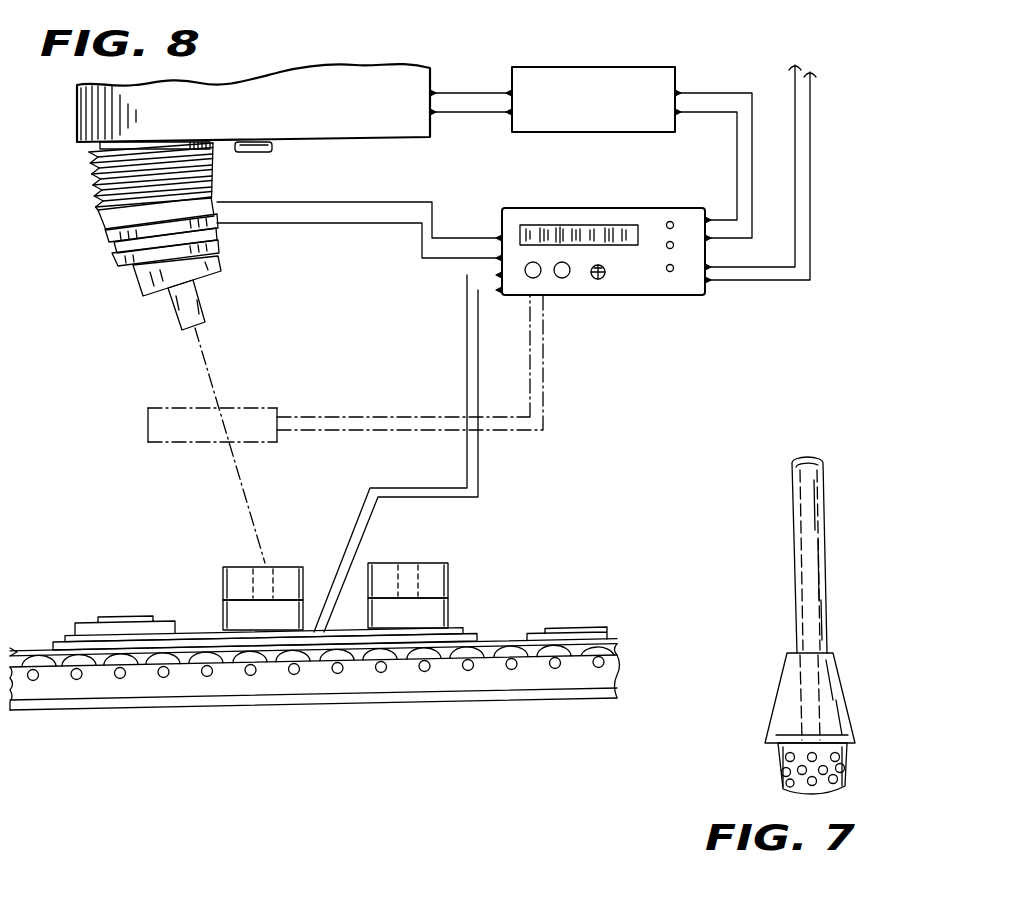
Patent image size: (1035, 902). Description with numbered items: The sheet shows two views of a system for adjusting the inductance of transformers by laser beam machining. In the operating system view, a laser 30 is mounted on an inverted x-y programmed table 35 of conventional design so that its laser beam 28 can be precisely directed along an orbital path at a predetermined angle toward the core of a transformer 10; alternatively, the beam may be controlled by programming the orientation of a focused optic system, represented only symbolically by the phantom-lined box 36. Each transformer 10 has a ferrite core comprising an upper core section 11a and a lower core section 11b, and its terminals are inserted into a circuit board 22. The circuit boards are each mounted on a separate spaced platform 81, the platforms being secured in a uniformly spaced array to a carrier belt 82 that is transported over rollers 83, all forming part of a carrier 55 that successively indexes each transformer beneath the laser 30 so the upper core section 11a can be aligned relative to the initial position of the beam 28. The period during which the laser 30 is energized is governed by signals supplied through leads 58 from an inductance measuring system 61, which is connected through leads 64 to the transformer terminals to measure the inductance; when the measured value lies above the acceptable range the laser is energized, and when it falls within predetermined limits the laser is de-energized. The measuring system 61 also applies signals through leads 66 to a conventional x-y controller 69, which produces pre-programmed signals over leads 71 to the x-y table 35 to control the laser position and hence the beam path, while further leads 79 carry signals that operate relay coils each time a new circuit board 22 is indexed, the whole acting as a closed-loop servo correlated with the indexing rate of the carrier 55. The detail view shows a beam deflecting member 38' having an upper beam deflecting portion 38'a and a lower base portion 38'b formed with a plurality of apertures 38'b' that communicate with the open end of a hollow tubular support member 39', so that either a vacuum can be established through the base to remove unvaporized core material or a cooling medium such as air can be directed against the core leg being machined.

In FIG. 8, the x-y table 35 is at (290, 66).
In FIG. 8, the laser 30 is at (221, 258).
In FIG. 8, the laser beam 28 is at (203, 352).
In FIG. 8, the focused optic system 36 is at (241, 408).
In FIG. 8, the leads 58 is at (373, 222).
In FIG. 8, the inductance measuring system 61 is at (631, 297).
In FIG. 8, the x-y controller 69 is at (623, 67).
In FIG. 8, the leads 71 is at (455, 112).
In FIG. 8, the leads 66 is at (740, 147).
In FIG. 8, the leads 79 is at (808, 108).
In FIG. 8, the leads 64 is at (423, 453).
In FIG. 8, the transformer 10 is at (338, 574).
In FIG. 8, the upper core section 11a is at (248, 567).
In FIG. 8, the lower core section 11b is at (305, 612).
In FIG. 8, the circuit board 22 is at (212, 633).
In FIG. 8, the platform 81 is at (470, 638).
In FIG. 8, the carrier belt 82 is at (518, 641).
In FIG. 8, the rollers 83 is at (607, 632).
In FIG. 8, the carrier 55 is at (620, 680).
In FIG. 7, the hollow tubular support member 39' is at (839, 555).
In FIG. 7, the beam deflecting member 38' is at (821, 713).
In FIG. 7, the upper beam deflecting portion 38'a is at (778, 698).
In FIG. 7, the lower base portion 38'b is at (859, 774).
In FIG. 7, the apertures 38'b' is at (861, 780).